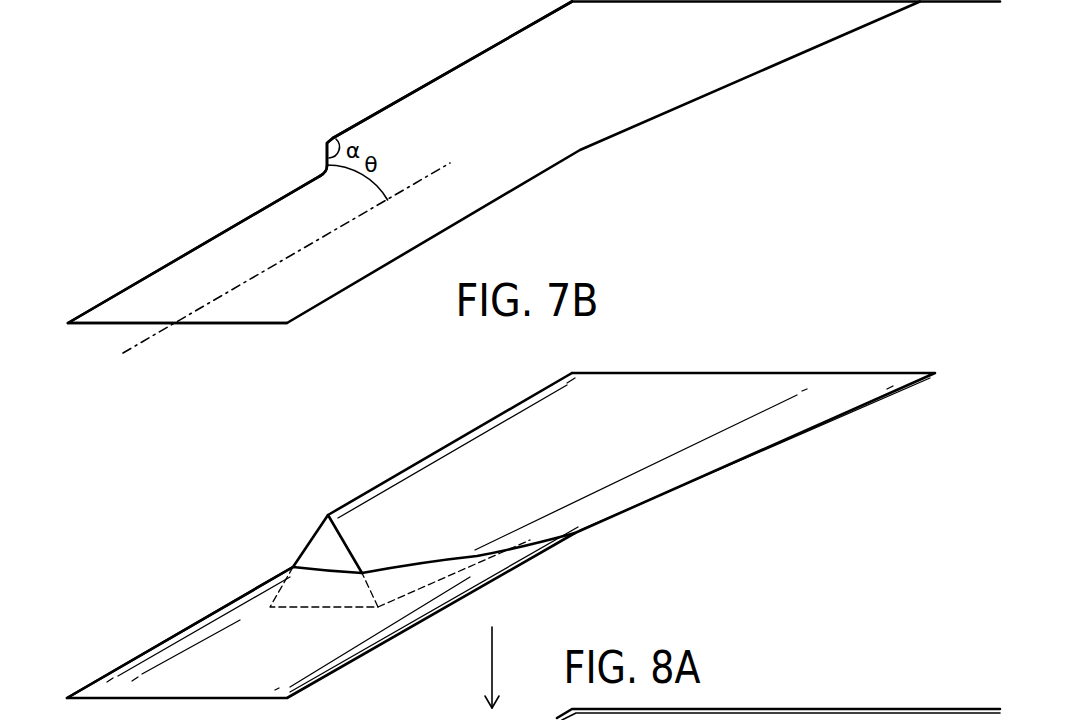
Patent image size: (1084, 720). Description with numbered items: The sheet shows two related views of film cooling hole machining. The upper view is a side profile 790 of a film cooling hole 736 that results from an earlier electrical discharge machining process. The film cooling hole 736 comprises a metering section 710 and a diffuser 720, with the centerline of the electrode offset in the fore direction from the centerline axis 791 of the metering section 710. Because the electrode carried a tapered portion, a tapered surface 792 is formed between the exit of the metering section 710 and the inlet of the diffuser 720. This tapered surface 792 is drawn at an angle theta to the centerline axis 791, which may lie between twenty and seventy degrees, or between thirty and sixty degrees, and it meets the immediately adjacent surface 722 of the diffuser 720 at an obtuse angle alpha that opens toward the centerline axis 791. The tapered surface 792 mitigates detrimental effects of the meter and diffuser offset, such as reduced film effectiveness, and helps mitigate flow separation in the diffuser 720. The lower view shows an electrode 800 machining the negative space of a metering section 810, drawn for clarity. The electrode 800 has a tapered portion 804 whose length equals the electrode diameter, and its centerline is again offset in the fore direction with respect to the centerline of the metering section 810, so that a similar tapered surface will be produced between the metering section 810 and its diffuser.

In FIG. 7B, the diffuser 720 is at (637, 95).
In FIG. 7B, the film cooling hole 736 is at (483, 85).
In FIG. 7B, the immediately adjacent surface of diffuser 722 is at (353, 130).
In FIG. 7B, the tapered surface 792 is at (331, 167).
In FIG. 7B, the metering section 710 is at (277, 230).
In FIG. 7B, the profile 790 is at (222, 232).
In FIG. 7B, the centerline axis 791 is at (132, 350).
In FIG. 8A, the electrode 800 is at (453, 477).
In FIG. 8A, the tapered portion 804 is at (317, 550).
In FIG. 8A, the metering section 810 is at (210, 657).